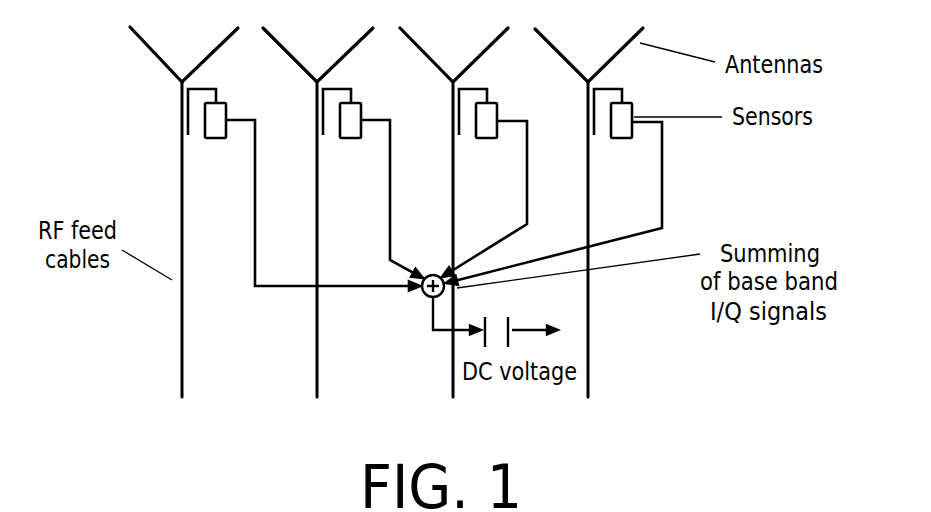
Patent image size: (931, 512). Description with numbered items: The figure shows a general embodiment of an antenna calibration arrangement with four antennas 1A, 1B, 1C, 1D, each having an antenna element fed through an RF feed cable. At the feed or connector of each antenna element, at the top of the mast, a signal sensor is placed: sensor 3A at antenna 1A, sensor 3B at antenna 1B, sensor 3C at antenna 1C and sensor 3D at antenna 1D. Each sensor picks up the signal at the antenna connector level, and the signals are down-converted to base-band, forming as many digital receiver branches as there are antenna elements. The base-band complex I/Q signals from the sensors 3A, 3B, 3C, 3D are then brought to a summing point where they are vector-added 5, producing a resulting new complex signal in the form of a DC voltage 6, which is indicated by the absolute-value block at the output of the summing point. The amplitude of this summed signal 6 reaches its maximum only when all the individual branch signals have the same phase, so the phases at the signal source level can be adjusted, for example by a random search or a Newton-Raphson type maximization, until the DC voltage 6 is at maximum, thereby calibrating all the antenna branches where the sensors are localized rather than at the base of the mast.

The antenna 1A is at (165, 62).
The antenna 1B is at (300, 62).
The antenna 1C is at (436, 62).
The antenna 1D is at (571, 62).
The sensor 3A is at (226, 109).
The sensor 3B is at (361, 109).
The sensor 3C is at (497, 109).
The sensor 3D is at (632, 109).
The vector addition 5 is at (423, 293).
The DC voltage 6 is at (504, 322).